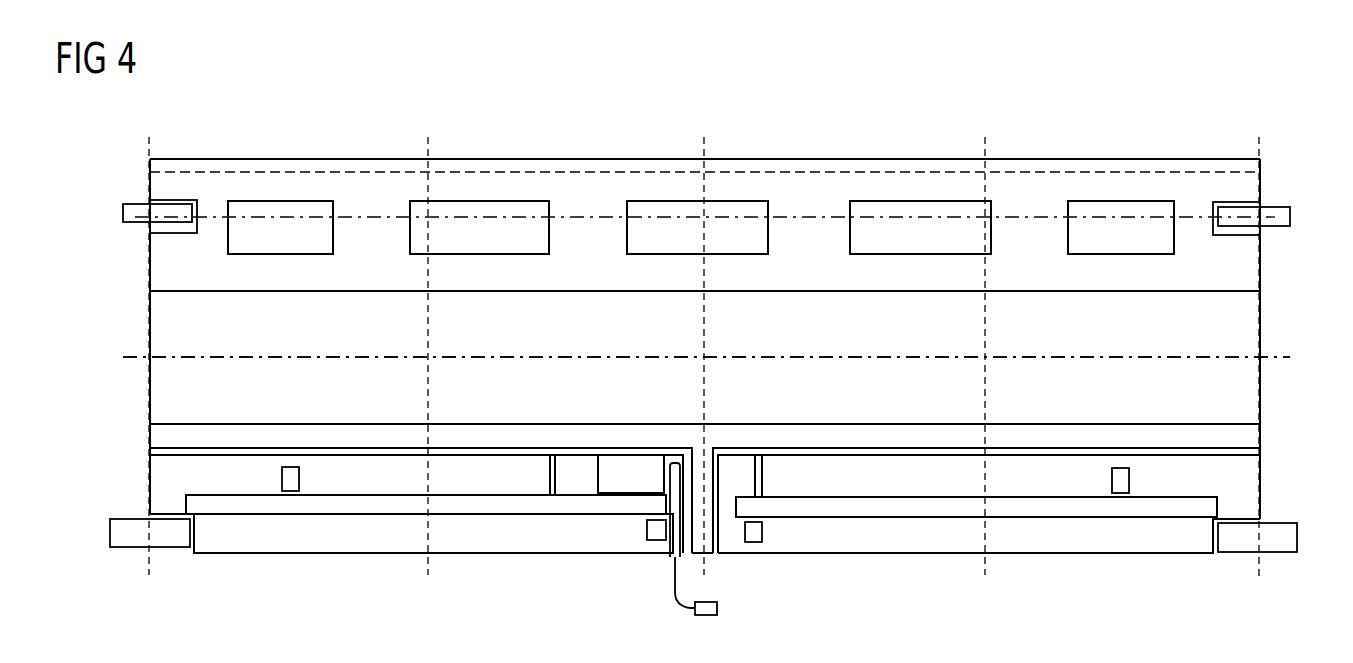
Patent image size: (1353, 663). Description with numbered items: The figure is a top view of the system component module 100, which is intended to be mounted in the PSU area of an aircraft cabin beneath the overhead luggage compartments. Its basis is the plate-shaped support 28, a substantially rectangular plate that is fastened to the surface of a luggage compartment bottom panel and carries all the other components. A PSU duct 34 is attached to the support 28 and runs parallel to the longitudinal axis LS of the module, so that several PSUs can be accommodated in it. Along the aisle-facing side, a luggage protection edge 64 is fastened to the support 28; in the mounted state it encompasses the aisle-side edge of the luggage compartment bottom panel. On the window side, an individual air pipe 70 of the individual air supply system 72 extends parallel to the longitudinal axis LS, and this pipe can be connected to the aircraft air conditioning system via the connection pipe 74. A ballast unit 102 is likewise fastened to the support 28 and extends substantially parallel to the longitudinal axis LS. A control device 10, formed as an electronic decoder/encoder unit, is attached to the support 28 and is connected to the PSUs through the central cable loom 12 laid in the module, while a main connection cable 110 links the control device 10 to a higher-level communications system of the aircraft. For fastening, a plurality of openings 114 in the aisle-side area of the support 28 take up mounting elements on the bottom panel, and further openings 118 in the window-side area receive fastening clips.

The system component module 100 is at (774, 96).
The luggage protection edge 64 is at (200, 159).
The plate-shaped support 28 is at (1020, 186).
The PSU duct 34 is at (158, 326).
The openings 114 is at (425, 255).
The individual air supply system 72 is at (124, 454).
The individual air pipe 70 is at (858, 434).
The control device 10 is at (622, 466).
The ballast unit 102 is at (388, 507).
The central cable loom 12 is at (857, 459).
The further openings 118 is at (300, 478).
The main connection cable 110 is at (673, 580).
The connection pipe 74 is at (700, 529).
The longitudinal axis LS is at (1290, 357).